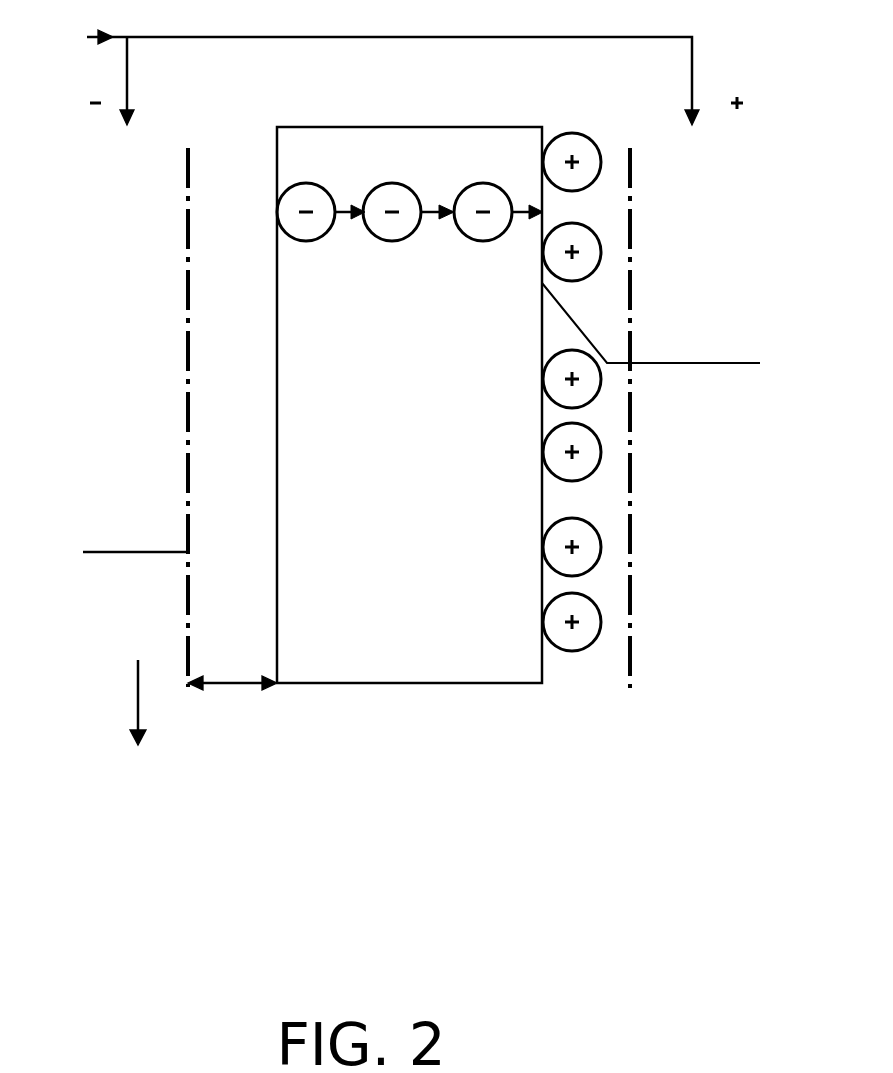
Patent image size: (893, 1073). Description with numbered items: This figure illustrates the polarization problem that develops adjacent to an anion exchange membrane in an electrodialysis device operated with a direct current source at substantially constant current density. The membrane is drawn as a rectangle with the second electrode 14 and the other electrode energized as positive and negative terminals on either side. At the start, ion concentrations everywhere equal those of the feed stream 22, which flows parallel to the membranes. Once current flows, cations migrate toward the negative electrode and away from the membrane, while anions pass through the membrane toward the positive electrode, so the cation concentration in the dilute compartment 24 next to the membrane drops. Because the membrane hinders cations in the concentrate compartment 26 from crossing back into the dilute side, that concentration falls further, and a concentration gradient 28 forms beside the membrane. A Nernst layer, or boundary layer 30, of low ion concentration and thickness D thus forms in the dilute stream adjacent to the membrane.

The second electrode 14 is at (410, 683).
The feed stream 22 is at (402, 62).
The dilute compartment 24 is at (138, 697).
The concentrate compartment 26 is at (673, 653).
The concentration gradient 28 is at (134, 551).
The boundary layer 30 is at (238, 683).